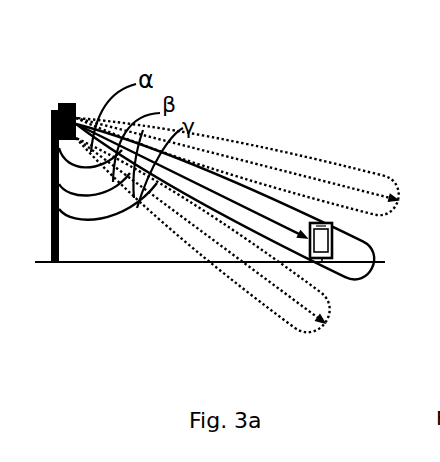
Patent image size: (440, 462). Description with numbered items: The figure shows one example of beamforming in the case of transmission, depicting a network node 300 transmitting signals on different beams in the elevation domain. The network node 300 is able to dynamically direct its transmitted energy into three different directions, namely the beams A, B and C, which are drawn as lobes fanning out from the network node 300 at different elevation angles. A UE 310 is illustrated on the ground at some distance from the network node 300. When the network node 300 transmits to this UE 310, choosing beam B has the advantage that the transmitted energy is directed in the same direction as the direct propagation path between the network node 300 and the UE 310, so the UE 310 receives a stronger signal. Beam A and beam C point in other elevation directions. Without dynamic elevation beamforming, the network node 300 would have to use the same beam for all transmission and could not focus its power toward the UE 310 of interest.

The network node 300 is at (62, 108).
The UE 310 is at (322, 262).
The beam A is at (245, 167).
The beam B is at (233, 208).
The beam C is at (213, 241).